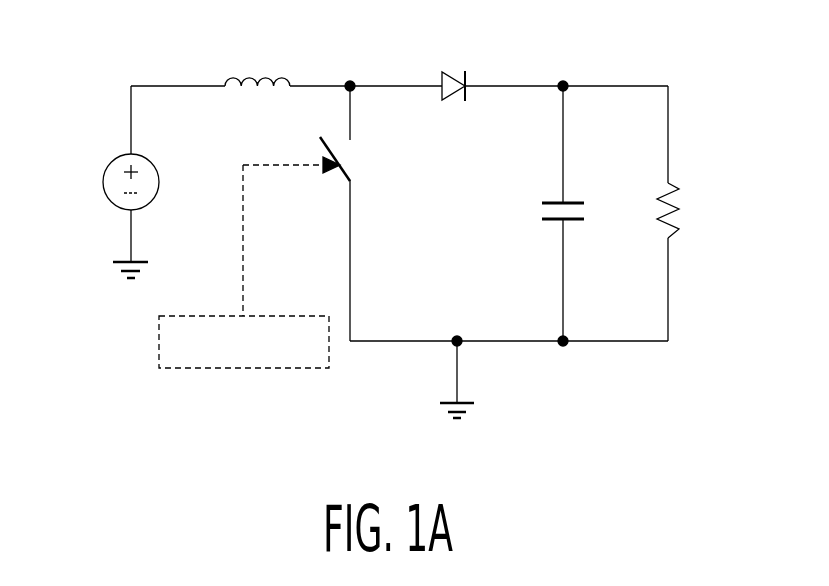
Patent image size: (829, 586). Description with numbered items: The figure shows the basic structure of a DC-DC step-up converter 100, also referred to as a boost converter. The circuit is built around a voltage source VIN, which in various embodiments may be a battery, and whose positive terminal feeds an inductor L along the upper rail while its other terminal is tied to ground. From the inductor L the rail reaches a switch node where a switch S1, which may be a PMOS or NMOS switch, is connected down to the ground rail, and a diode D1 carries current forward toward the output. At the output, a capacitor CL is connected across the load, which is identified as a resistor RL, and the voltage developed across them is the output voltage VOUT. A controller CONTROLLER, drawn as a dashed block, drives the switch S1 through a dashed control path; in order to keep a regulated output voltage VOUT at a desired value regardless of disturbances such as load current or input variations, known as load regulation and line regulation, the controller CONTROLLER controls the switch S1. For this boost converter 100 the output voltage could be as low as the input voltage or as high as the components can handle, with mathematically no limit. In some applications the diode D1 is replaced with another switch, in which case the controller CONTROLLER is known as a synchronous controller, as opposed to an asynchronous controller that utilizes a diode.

The DC-DC step-up converter 100 is at (617, 42).
The inductor L is at (257, 64).
The diode D1 is at (454, 67).
The switch S1 is at (352, 213).
The capacitor CL is at (543, 213).
The load RL is at (689, 213).
The voltage source VIN is at (109, 182).
The output voltage VOUT is at (644, 72).
The controller CONTROLLER is at (249, 262).